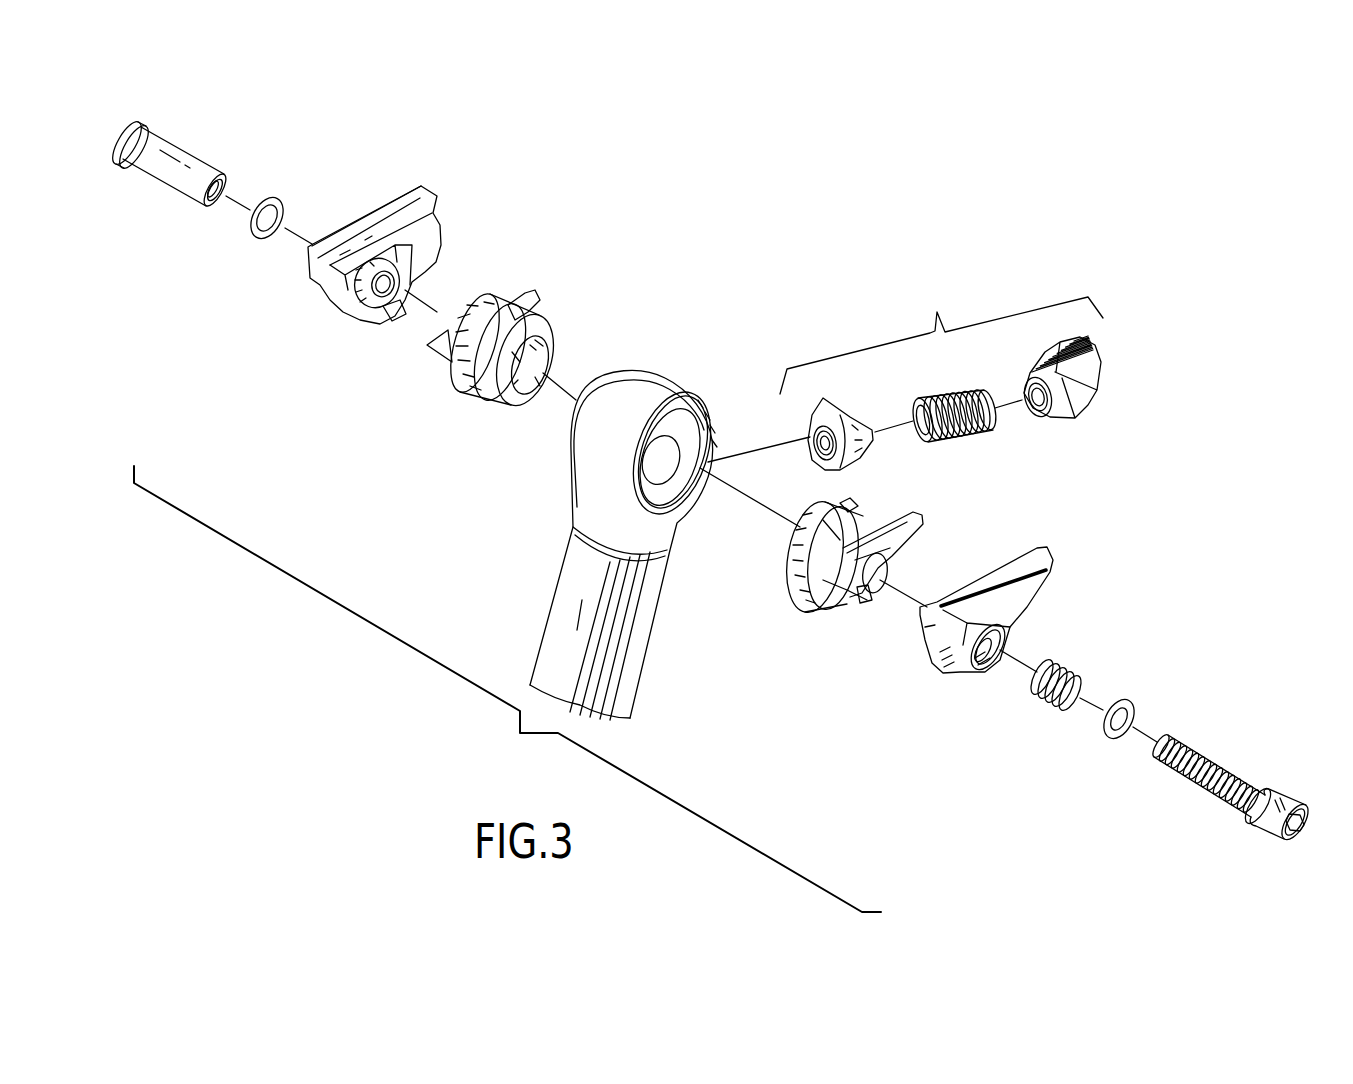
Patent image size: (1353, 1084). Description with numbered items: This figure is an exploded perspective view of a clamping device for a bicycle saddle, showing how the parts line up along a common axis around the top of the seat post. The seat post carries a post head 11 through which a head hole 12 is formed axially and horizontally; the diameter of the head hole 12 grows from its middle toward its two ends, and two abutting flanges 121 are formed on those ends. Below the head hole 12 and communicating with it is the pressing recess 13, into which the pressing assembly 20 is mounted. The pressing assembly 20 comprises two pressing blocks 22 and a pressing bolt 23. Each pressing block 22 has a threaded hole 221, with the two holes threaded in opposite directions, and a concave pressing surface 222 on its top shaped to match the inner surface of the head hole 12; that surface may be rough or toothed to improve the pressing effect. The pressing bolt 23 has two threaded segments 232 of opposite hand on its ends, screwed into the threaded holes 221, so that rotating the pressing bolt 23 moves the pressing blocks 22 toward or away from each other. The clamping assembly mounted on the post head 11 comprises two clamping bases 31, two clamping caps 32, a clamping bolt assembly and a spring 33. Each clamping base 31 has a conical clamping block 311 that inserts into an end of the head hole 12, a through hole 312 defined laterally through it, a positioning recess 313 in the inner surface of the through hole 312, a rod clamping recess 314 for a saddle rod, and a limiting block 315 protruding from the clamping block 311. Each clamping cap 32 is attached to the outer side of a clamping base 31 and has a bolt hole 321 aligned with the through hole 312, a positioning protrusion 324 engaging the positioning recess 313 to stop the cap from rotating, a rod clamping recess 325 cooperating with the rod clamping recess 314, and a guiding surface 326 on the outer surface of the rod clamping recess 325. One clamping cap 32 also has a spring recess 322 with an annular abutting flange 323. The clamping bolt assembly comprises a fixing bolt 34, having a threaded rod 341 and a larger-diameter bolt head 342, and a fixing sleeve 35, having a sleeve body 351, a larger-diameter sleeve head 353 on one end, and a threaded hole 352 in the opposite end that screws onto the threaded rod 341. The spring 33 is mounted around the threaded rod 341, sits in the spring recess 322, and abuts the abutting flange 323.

The post head 11 is at (642, 525).
The head hole 12 is at (686, 420).
The pressing recess 13 is at (647, 470).
The abutting flanges 121 is at (686, 488).
The pressing assembly 20 is at (979, 389).
The pressing blocks 22 is at (1099, 404).
The threaded hole 221 is at (1043, 411).
The concave pressing surface 222 is at (1105, 354).
The pressing bolt 23 is at (919, 426).
The threaded segments 232 is at (970, 397).
The clamping bases 31 is at (694, 468).
The clamping block 311 is at (481, 392).
The through hole 312 is at (531, 357).
The positioning recess 313 is at (872, 622).
The rod clamping recess 314 is at (921, 522).
The limiting block 315 is at (524, 313).
The clamping caps 32 is at (671, 441).
The bolt hole 321 is at (391, 284).
The spring recess 322 is at (976, 664).
The annular abutting flange 323 is at (1010, 636).
The positioning protrusion 324 is at (391, 313).
The rod clamping recess 325 is at (426, 213).
The guiding surface 326 is at (433, 188).
The spring 33 is at (1081, 678).
The fixing bolt 34 is at (1215, 780).
The threaded rod 341 is at (1186, 766).
The bolt head 342 is at (1283, 827).
The fixing sleeve 35 is at (183, 165).
The sleeve body 351 is at (172, 177).
The threaded hole 352 is at (213, 196).
The sleeve head 353 is at (150, 128).